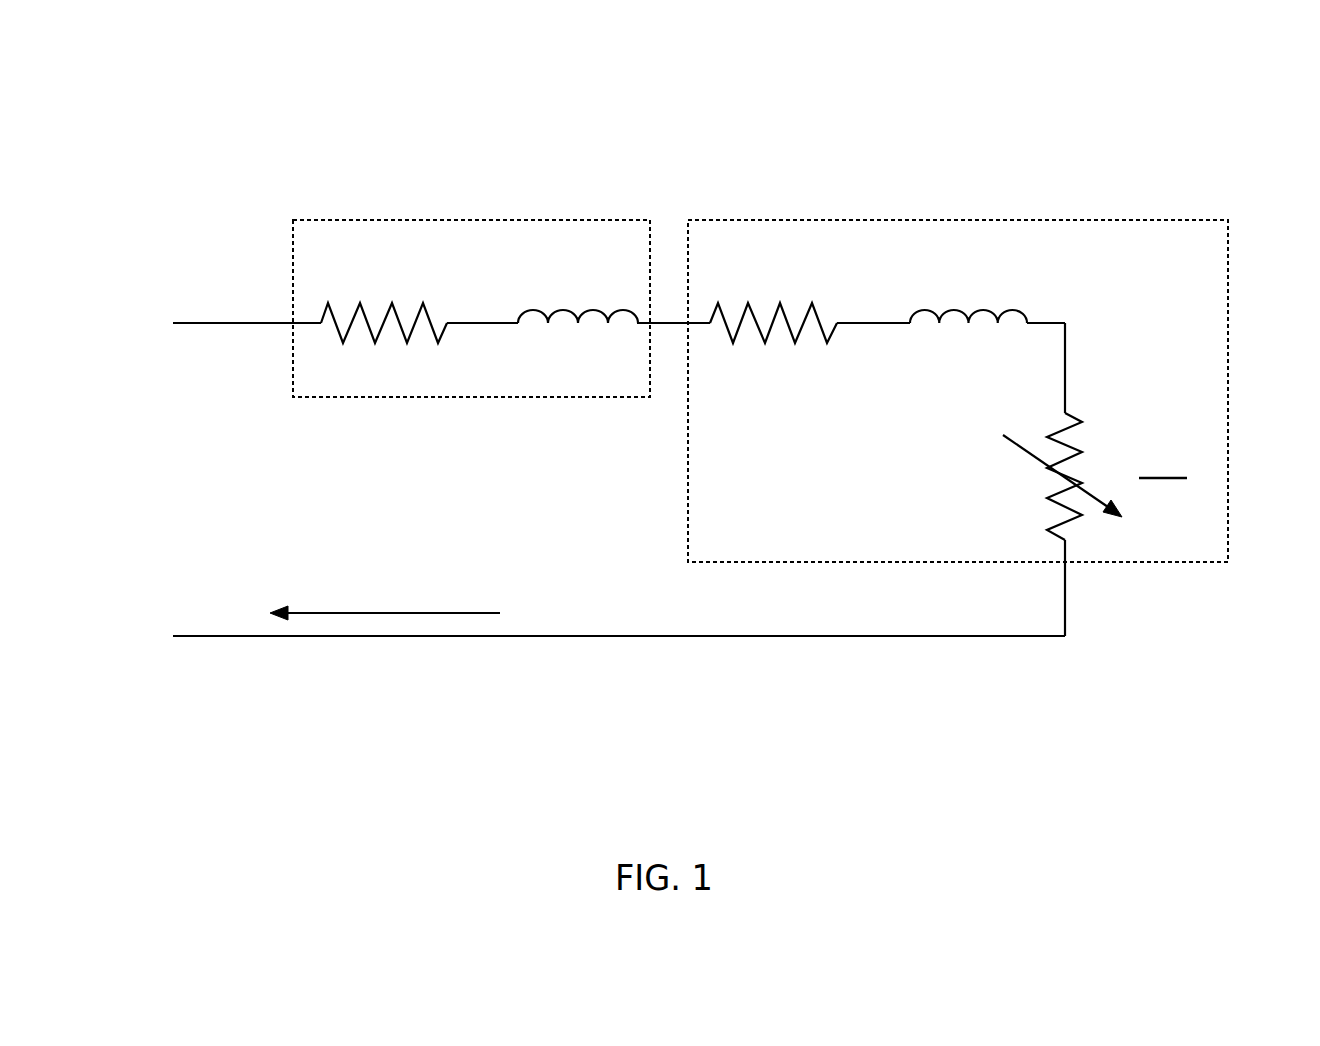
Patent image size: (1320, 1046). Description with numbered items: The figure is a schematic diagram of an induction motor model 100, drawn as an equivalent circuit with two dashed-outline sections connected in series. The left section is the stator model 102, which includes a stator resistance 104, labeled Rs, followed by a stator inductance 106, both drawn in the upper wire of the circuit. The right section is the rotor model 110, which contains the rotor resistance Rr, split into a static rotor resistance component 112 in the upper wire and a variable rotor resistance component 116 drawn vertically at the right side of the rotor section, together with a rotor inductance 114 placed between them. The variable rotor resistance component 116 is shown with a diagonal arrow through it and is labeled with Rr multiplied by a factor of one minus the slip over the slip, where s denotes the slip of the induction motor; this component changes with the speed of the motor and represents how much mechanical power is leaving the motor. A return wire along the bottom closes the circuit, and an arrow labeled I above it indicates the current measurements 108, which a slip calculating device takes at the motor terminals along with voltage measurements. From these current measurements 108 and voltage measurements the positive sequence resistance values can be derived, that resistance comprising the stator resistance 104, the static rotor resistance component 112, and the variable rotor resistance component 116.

The induction motor model 100 is at (1038, 73).
The stator model 102 is at (510, 219).
The stator resistance 104 is at (390, 306).
The stator inductance 106 is at (525, 318).
The current measurements 108 is at (393, 612).
The rotor model 110 is at (1000, 219).
The static rotor resistance component 112 is at (780, 305).
The rotor inductance 114 is at (1002, 320).
The variable rotor resistance component 116 is at (1072, 415).